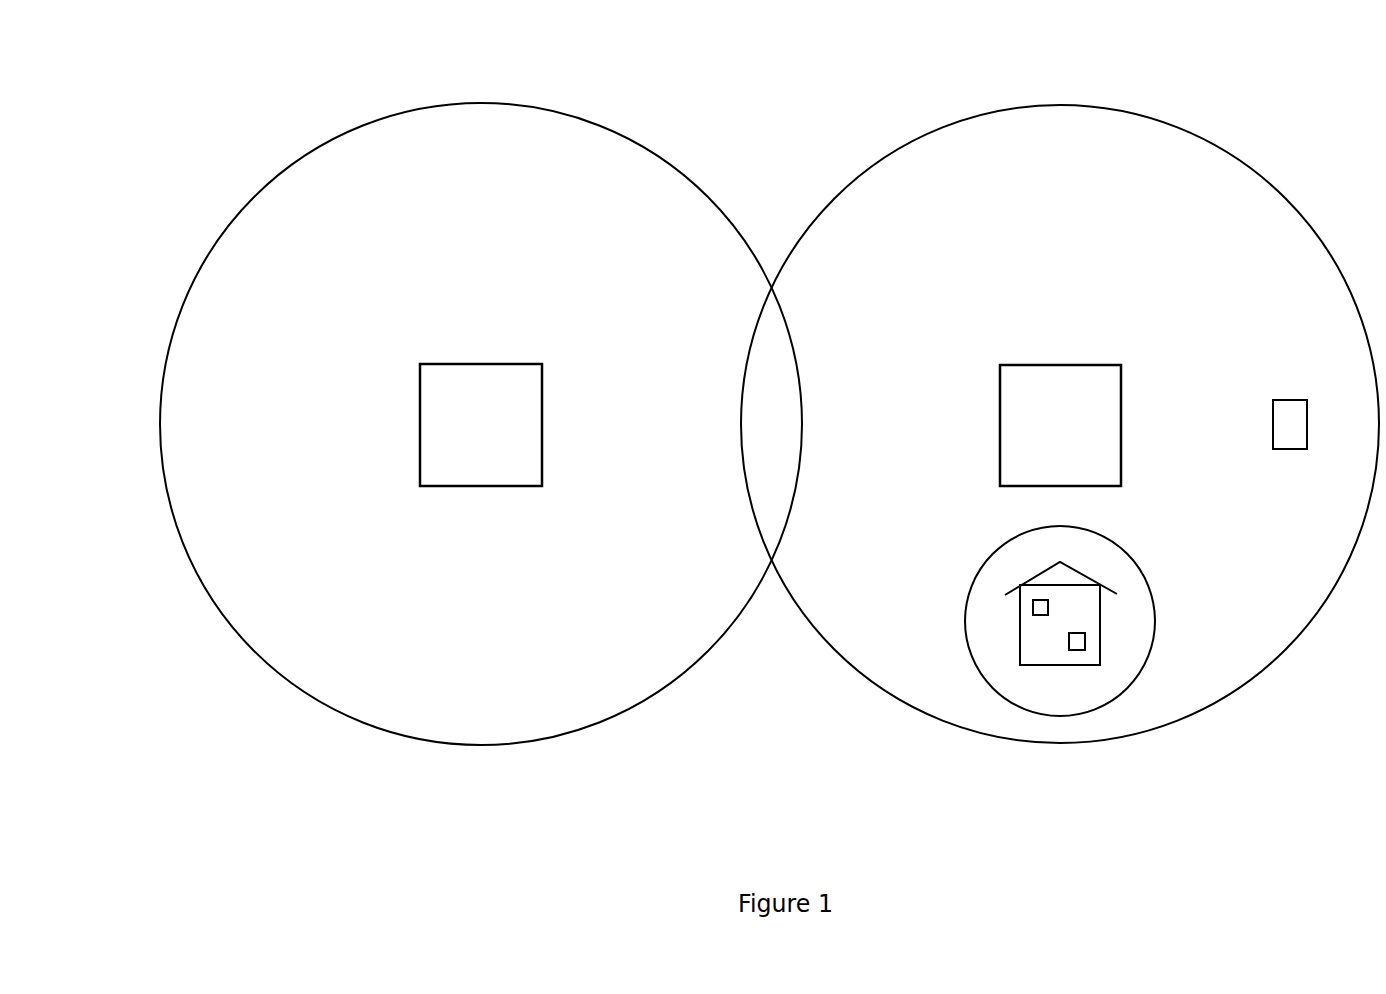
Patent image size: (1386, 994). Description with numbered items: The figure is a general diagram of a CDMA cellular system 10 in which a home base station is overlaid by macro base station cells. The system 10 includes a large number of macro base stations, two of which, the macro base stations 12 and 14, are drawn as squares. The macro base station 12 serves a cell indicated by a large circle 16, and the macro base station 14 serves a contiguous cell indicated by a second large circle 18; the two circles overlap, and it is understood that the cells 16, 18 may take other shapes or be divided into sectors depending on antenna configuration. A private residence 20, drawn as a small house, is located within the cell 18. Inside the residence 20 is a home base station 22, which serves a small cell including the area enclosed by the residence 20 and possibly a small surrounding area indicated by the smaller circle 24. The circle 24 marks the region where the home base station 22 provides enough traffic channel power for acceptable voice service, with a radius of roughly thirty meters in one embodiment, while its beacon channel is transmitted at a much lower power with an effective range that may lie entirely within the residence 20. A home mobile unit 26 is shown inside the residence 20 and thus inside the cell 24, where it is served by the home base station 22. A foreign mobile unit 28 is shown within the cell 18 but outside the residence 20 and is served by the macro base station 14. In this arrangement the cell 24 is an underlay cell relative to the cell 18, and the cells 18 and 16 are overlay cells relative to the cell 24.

The CDMA cellular system 10 is at (836, 60).
The macro base station 12 is at (497, 434).
The macro base station 14 is at (1076, 434).
The cell 16 is at (481, 424).
The cell 18 is at (1060, 424).
The private residence 20 is at (1092, 583).
The home base station 22 is at (1137, 649).
The cell 24 is at (1094, 621).
The home mobile unit 26 is at (981, 637).
The foreign mobile unit 28 is at (1290, 455).